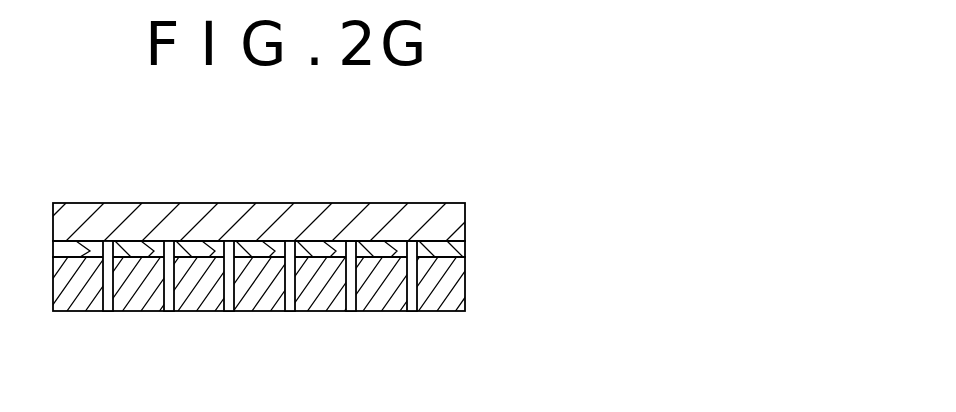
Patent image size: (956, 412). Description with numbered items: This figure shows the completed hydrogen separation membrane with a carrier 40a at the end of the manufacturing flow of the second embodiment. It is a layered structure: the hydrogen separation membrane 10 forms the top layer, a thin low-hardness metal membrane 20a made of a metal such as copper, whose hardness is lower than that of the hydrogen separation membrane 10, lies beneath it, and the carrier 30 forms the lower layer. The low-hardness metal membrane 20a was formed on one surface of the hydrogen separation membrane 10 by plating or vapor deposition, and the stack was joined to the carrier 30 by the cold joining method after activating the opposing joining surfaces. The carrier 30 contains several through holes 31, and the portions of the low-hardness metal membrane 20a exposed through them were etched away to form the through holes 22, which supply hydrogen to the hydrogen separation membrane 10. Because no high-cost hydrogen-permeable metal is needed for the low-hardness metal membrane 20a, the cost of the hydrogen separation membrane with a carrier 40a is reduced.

The hydrogen separation membrane 10 is at (453, 220).
The low-hardness metal membrane 20a is at (455, 248).
The through holes 22 is at (415, 242).
The carrier 30 is at (453, 285).
The through holes 31 is at (410, 337).
The hydrogen separation membrane with a carrier 40a is at (364, 257).